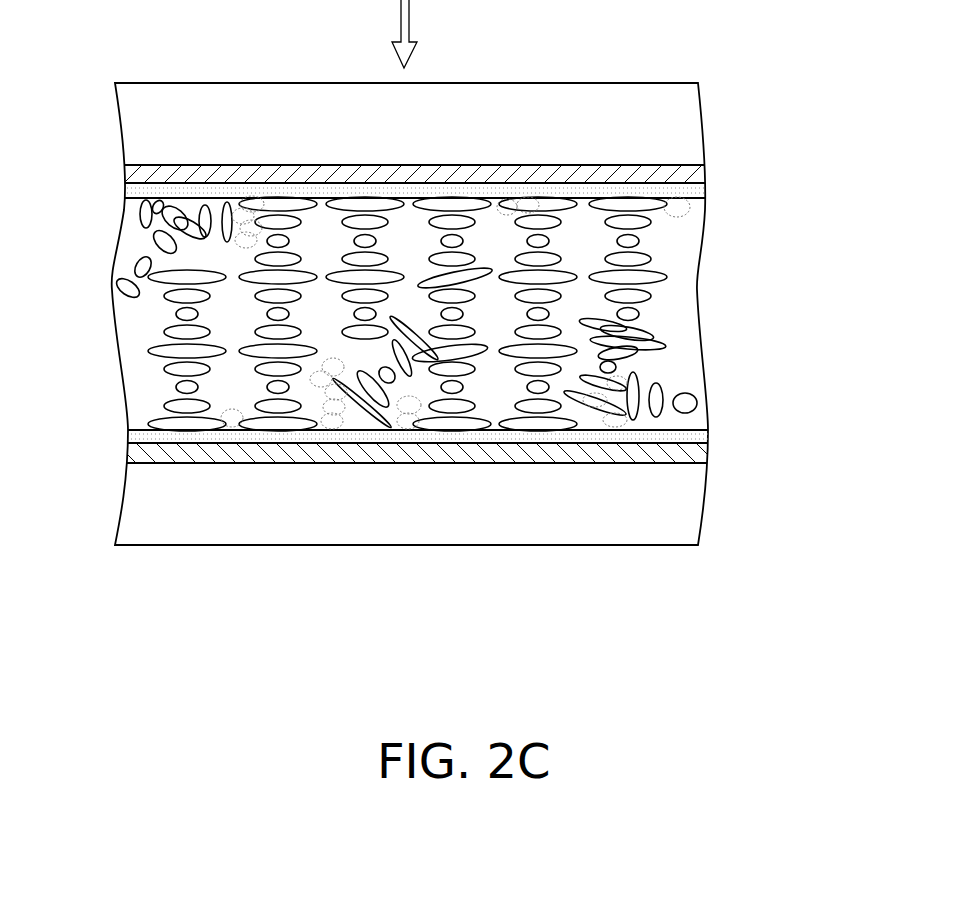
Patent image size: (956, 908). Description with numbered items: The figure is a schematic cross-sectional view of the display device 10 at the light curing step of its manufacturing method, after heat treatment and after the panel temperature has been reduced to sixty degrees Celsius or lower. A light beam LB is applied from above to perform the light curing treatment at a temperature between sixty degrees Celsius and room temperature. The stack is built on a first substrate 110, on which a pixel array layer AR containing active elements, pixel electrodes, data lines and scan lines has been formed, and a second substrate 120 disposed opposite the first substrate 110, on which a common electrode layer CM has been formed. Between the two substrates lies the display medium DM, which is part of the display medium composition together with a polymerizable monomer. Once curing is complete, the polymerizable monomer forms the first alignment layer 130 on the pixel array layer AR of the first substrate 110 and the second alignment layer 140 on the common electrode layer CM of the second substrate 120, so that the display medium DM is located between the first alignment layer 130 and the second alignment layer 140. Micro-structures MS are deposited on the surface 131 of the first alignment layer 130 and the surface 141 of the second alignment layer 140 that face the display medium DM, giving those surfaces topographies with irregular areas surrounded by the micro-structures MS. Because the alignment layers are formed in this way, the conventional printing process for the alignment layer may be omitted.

The display device 10 is at (825, 628).
The first substrate 110 is at (680, 132).
The second substrate 120 is at (688, 497).
The first alignment layer 130 is at (695, 191).
The second alignment layer 140 is at (710, 433).
The surface of the first alignment layer 131 is at (147, 210).
The surface of the second alignment layer 141 is at (139, 418).
The pixel array layer AR is at (685, 175).
The common electrode layer CM is at (697, 452).
The display medium DM is at (653, 277).
The micro-structures MS is at (260, 200).
The light beam LB is at (410, 13).